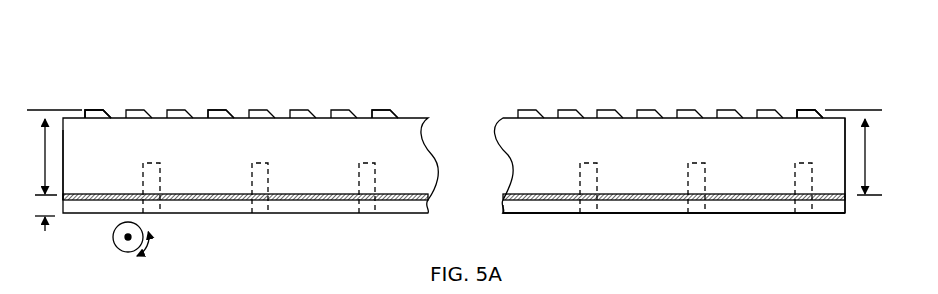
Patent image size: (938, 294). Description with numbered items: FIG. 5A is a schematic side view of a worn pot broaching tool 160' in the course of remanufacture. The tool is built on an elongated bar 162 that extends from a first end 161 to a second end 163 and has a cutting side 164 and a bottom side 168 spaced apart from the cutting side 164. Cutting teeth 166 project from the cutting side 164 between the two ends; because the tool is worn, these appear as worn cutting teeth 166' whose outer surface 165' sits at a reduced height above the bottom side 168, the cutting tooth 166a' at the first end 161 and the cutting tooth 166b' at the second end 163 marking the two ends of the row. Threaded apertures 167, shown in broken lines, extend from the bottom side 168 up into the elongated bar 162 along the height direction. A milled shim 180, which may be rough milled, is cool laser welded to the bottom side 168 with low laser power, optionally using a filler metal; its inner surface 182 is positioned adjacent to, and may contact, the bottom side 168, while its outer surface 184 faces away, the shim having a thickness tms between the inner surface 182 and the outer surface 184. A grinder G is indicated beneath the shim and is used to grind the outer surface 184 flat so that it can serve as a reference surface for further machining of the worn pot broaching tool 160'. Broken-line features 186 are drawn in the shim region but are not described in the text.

The worn pot broaching tool 160' is at (454, 121).
The first end 161 is at (63, 156).
The elongated bar 162 is at (199, 114).
The second end 163 is at (845, 140).
The cutting side 164 is at (409, 115).
The outer surface 165' is at (446, 92).
The cutting teeth 166 is at (670, 95).
The worn cutting teeth 166' is at (241, 96).
The cutting tooth at first end 166a' is at (126, 93).
The cutting tooth at second end 166b' is at (829, 95).
The threaded apertures 167 is at (161, 183).
The bottom side 168 is at (297, 194).
The milled shim 180 is at (776, 220).
The inner surface 182 is at (621, 197).
The outer surface 184 is at (673, 214).
The via (hidden, second portion) 186 is at (782, 196).
The grinder G is at (109, 253).
The thickness of milled shim tms is at (43, 230).